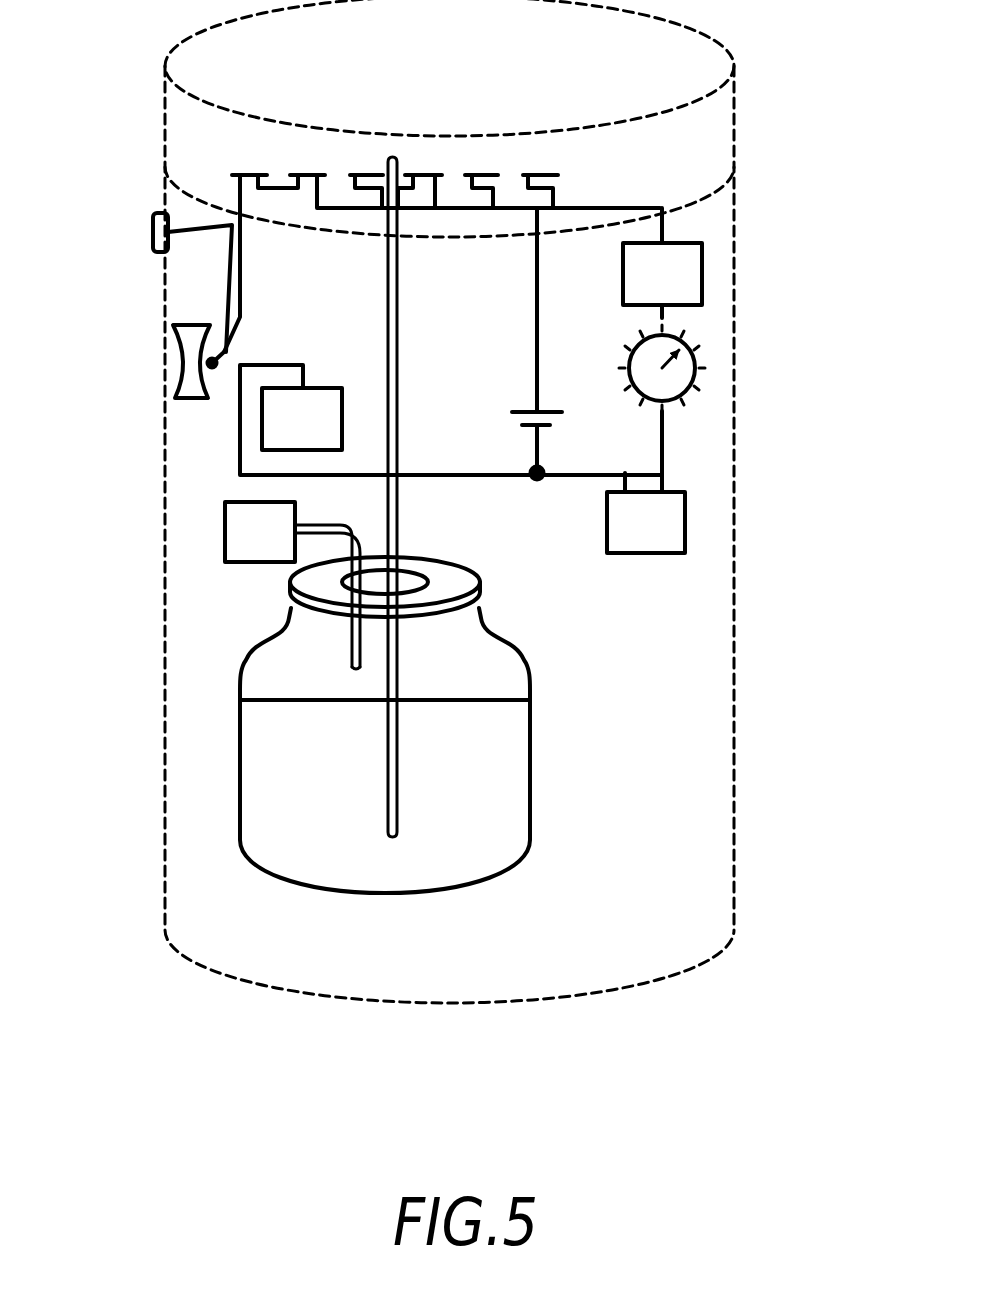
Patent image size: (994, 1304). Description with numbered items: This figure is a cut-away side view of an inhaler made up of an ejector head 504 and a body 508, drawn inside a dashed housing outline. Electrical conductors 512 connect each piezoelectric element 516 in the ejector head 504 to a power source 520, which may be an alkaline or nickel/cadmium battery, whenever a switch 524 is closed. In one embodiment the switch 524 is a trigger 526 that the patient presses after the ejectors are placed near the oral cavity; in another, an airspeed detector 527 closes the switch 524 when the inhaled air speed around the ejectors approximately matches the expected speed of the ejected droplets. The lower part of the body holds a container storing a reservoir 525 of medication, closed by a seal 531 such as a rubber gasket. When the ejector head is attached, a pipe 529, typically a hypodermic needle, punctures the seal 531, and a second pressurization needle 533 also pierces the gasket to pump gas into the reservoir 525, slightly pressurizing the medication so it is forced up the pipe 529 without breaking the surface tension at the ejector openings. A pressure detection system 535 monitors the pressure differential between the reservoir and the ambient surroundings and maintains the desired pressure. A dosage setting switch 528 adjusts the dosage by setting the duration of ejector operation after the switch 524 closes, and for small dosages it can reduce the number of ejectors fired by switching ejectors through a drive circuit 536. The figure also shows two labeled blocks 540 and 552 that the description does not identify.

The ejector head 504 is at (160, 113).
The body 508 is at (160, 538).
The electrical conductors 512 is at (241, 272).
The piezoelectric element 516 is at (250, 168).
The power source 520 is at (515, 344).
The switch 524 is at (247, 341).
The reservoir 525 is at (385, 750).
The trigger 526 is at (190, 348).
The airspeed detector 527 is at (153, 230).
The dosage setting switch 528 is at (697, 350).
The pipe 529 is at (398, 517).
The seal 531 is at (425, 575).
The second pressurization needle 533 is at (307, 522).
The pressure detection system 535 is at (260, 532).
The drive circuit 536 is at (662, 263).
The sensor 540 is at (451, 420).
The control unit 552 is at (646, 513).